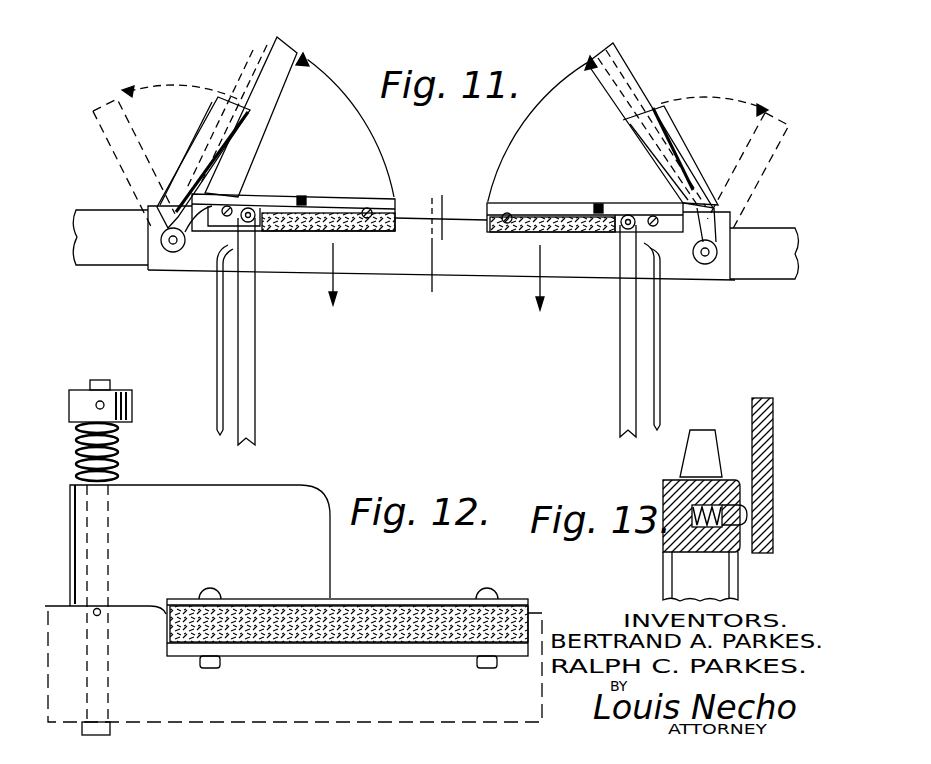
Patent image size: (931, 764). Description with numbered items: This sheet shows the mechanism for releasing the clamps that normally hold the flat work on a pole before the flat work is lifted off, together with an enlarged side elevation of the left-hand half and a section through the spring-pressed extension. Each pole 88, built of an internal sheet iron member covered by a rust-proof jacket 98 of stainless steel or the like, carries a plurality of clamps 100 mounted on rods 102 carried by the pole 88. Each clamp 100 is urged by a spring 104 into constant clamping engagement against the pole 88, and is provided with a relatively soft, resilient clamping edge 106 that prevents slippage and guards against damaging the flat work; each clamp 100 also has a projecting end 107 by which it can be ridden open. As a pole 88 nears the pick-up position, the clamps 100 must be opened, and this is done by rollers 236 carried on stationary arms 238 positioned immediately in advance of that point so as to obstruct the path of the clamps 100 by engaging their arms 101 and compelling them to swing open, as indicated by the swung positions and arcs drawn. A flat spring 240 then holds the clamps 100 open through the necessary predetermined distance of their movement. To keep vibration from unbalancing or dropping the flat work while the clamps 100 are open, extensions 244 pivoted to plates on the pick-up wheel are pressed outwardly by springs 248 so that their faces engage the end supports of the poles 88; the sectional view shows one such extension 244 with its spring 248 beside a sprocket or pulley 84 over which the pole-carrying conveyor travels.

In FIG. 13, the sprocket 84 is at (680, 490).
In FIG. 11, the pole 88 is at (105, 205).
In FIG. 11, the rust-proof jacket 98 is at (418, 268).
In FIG. 12, the rust-proof jacket 98 is at (372, 728).
In FIG. 11, the clamp 100 is at (272, 188).
In FIG. 12, the clamp 100 is at (347, 617).
In FIG. 11, the arm of clamp 101 is at (218, 96).
In FIG. 11, the rod 102 is at (167, 258).
In FIG. 12, the rod 102 is at (112, 384).
In FIG. 12, the spring 104 is at (118, 466).
In FIG. 11, the clamping edge 106 is at (370, 240).
In FIG. 12, the clamping edge 106 is at (430, 615).
In FIG. 11, the projecting end of clamp 107 is at (185, 154).
In FIG. 12, the projecting end of clamp 107 is at (187, 549).
In FIG. 11, the roller 236 is at (306, 201).
In FIG. 11, the stationary arm 238 is at (243, 370).
In FIG. 11, the flat spring 240 is at (222, 390).
In FIG. 13, the extension 244 is at (758, 403).
In FIG. 13, the spring 248 is at (670, 541).